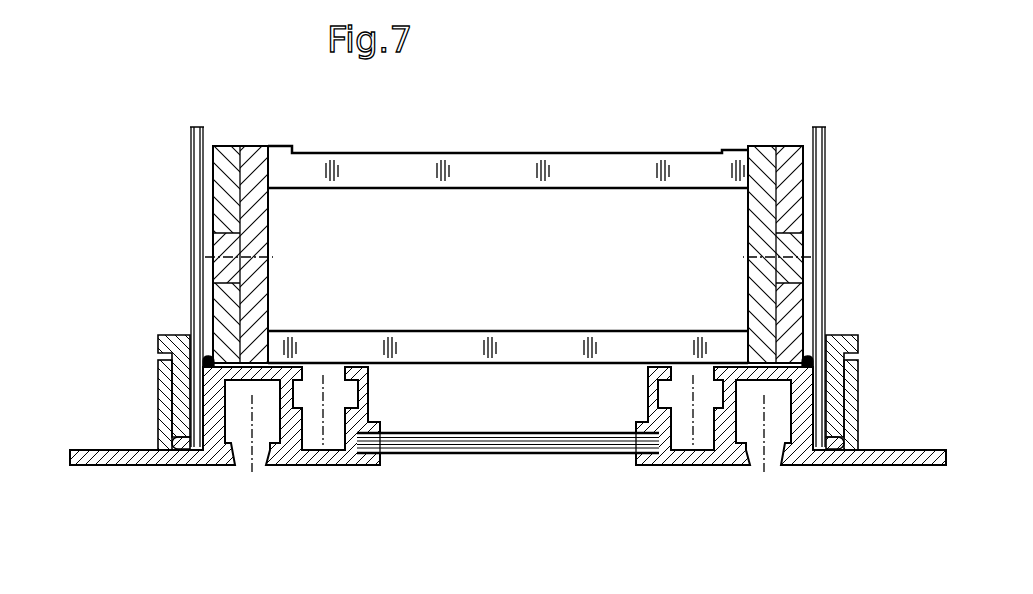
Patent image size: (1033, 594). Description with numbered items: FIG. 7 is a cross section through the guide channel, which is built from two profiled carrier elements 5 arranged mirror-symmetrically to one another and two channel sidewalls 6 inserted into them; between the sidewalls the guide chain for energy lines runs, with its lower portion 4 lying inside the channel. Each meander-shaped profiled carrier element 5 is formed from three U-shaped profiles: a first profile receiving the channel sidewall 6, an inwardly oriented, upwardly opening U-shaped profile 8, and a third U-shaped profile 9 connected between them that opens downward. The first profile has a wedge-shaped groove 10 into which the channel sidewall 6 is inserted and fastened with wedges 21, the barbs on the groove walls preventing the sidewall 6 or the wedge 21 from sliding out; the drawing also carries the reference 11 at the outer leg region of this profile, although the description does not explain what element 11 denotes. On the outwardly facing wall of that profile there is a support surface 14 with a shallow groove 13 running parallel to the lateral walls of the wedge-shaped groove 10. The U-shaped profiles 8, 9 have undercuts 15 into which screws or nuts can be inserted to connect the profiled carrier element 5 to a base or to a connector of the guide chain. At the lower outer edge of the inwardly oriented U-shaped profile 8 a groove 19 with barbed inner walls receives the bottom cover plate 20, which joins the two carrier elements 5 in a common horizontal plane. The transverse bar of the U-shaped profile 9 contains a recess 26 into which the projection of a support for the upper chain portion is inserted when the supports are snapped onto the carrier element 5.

The lower portion 4 is at (497, 165).
The profiled carrier element 5 is at (143, 463).
The channel sidewall 6 is at (191, 181).
The U-shaped profile 8 is at (340, 361).
The U-shaped profile 9 is at (267, 472).
The wedge-shaped groove 10 is at (195, 450).
The outer wall 11 is at (175, 465).
The shallow groove 13 is at (112, 448).
The support surface 14 is at (78, 466).
The undercut 15 is at (335, 390).
The groove 19 is at (383, 464).
The bottom cover plate 20 is at (505, 455).
The wedge 21 is at (162, 340).
The recess 26 is at (207, 366).